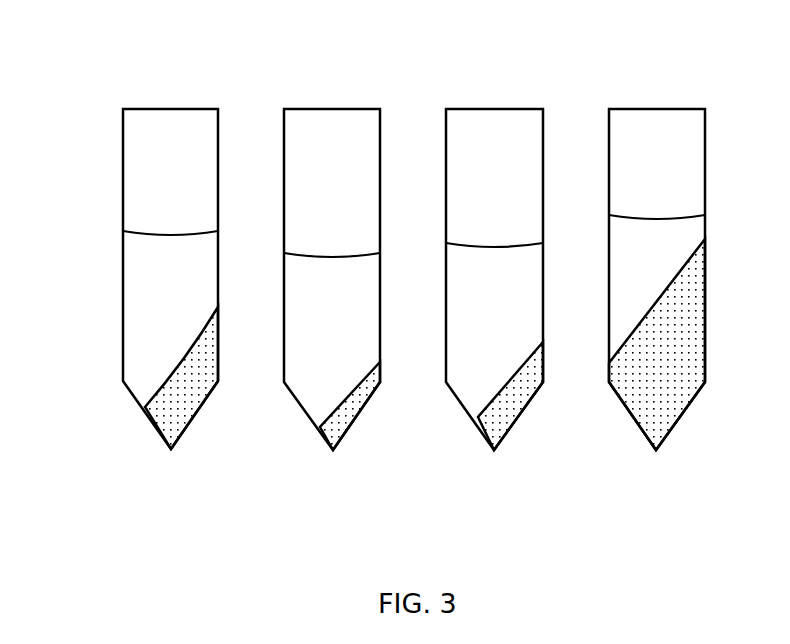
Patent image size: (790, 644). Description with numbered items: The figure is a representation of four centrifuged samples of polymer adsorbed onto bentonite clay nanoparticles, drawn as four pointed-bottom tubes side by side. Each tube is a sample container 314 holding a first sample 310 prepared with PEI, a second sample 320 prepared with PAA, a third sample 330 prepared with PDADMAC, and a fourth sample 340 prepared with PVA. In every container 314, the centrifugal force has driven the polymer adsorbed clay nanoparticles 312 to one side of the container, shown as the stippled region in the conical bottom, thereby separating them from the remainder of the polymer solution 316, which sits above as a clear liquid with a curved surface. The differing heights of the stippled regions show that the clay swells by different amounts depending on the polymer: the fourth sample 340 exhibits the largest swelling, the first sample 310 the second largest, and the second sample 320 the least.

The first sample 310 is at (136, 77).
The polymer adsorbed clay nanoparticles 312 is at (170, 423).
The sample container 314 is at (123, 178).
The remainder of the polymer solution 316 is at (136, 285).
The second sample 320 is at (305, 75).
The third sample 330 is at (466, 78).
The fourth sample 340 is at (638, 87).